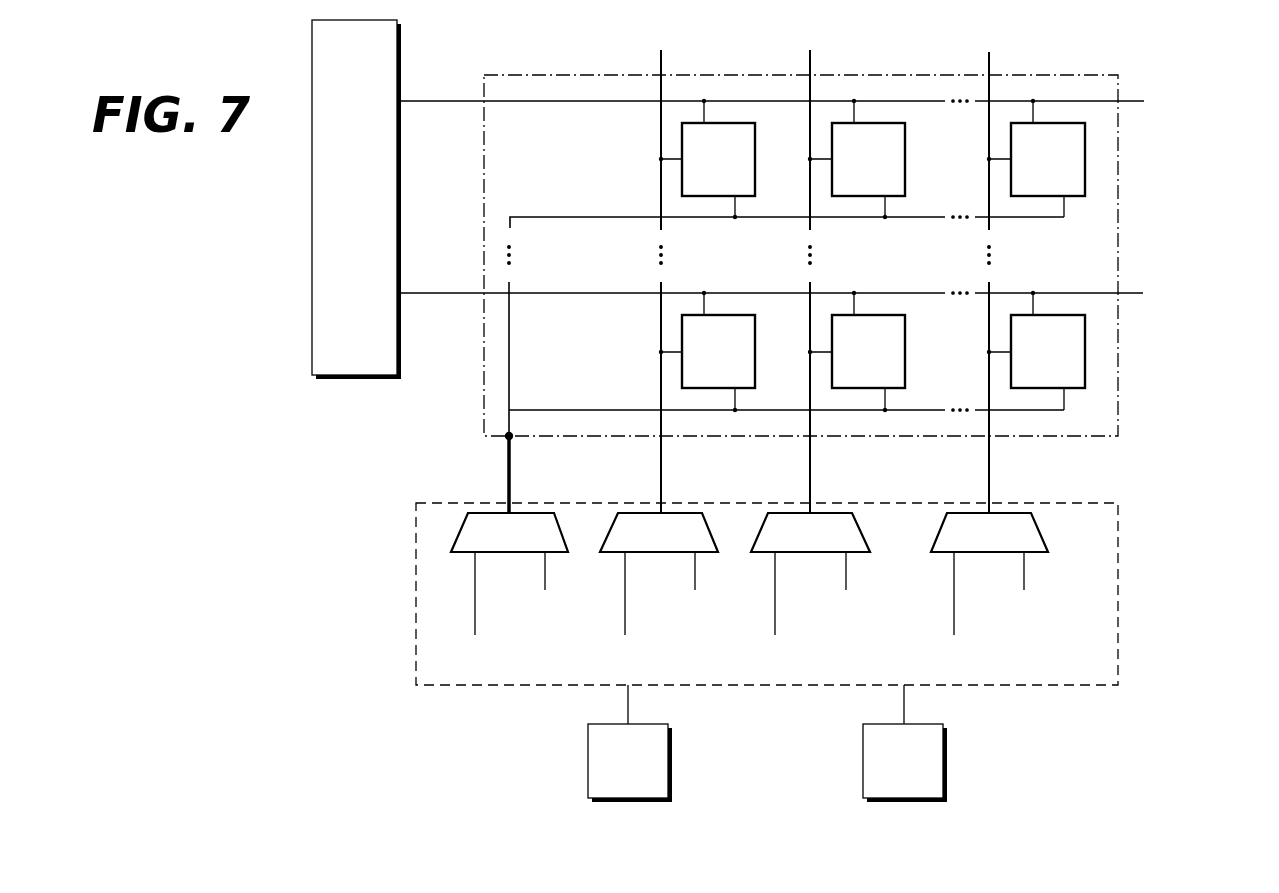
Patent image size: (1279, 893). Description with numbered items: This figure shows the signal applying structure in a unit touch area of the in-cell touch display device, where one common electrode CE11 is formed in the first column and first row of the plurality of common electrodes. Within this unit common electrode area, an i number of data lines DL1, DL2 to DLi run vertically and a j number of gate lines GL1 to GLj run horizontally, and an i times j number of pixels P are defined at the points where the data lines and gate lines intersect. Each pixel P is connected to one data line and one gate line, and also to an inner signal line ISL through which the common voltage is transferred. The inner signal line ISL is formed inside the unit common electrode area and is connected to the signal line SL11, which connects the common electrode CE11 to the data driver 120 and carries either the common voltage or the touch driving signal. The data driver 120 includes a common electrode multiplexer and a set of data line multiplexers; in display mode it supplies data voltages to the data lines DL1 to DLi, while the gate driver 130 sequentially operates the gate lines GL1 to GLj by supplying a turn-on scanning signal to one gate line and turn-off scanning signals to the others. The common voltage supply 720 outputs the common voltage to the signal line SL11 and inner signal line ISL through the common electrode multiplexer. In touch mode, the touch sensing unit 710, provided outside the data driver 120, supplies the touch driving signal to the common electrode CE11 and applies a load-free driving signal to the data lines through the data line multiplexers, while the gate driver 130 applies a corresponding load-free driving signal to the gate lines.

The gate driver 130 is at (340, 206).
The data driver 120 is at (1118, 524).
The touch sensing unit 710 is at (613, 770).
The common voltage supply 720 is at (888, 770).
The common electrode CE11 is at (1118, 201).
The inner signal line ISL is at (1064, 410).
The signal line SL11 is at (505, 483).
The gate line GL1 is at (770, 89).
The gate line GLj is at (770, 281).
The data line DL1 is at (660, 268).
The data line DL2 is at (809, 268).
The data line DLi is at (989, 268).
The pixel P is at (872, 255).